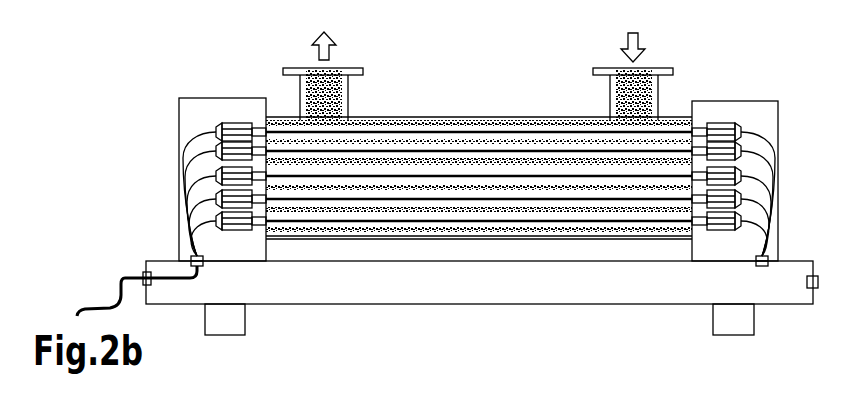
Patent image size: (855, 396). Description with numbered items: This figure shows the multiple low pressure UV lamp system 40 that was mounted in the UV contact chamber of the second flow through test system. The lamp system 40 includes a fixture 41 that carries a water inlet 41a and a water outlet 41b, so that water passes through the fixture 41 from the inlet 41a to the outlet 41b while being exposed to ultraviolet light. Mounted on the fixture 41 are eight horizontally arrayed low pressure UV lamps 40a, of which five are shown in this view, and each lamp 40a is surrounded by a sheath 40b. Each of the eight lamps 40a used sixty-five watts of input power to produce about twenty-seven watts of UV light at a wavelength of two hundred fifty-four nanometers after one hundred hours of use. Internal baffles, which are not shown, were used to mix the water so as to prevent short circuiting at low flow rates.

The low pressure lamp system 40 is at (498, 88).
The low pressure UV lamp 40a is at (311, 218).
The sheath 40b is at (258, 226).
The fixture 41 is at (178, 130).
The water inlet 41a is at (658, 92).
The water outlet 41b is at (348, 97).